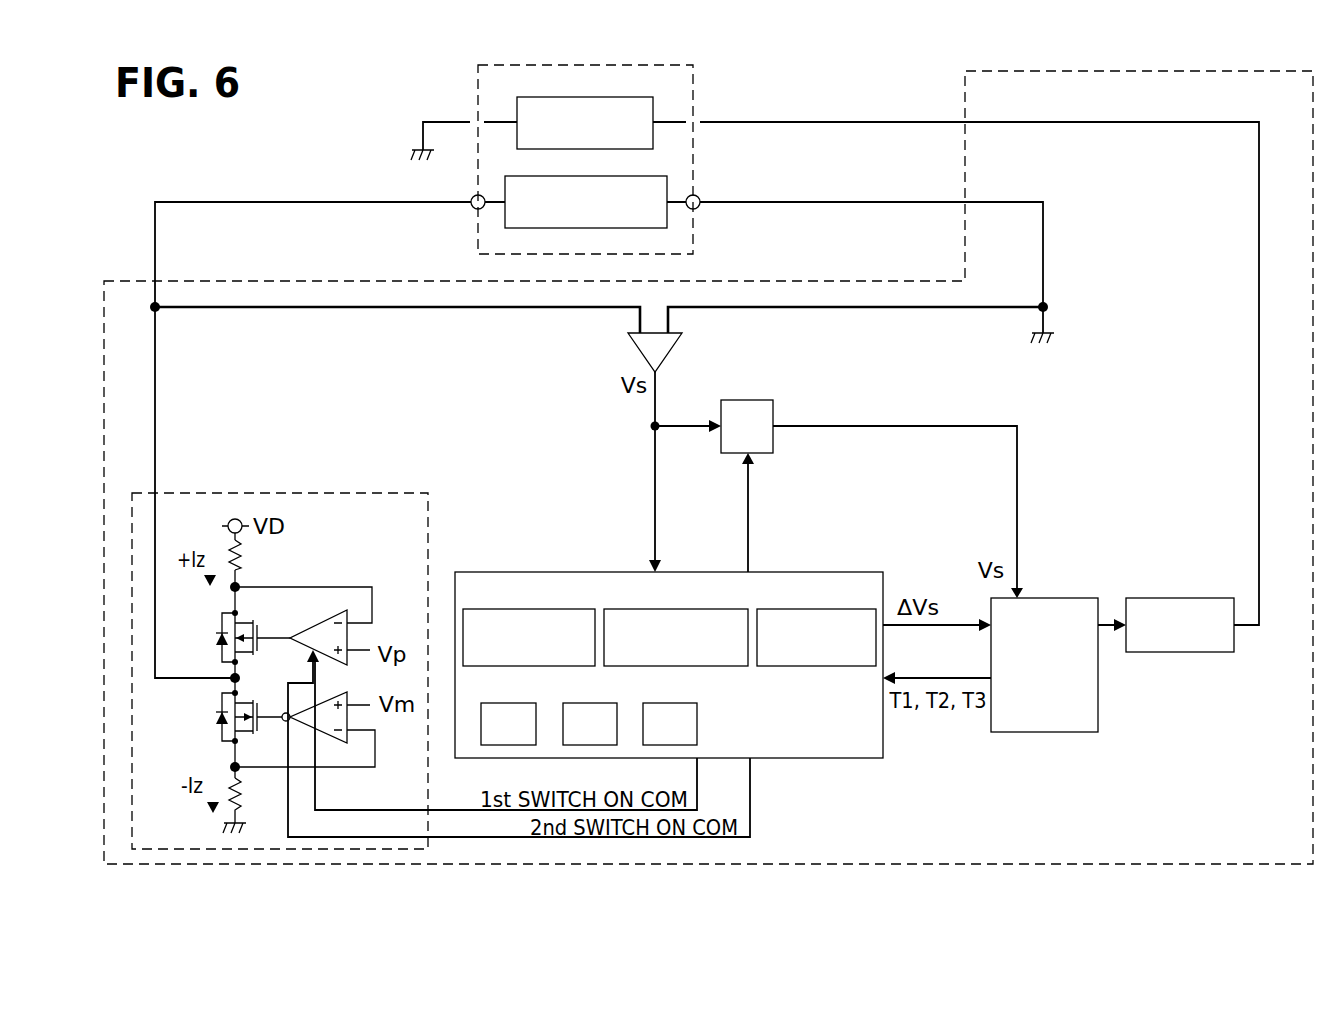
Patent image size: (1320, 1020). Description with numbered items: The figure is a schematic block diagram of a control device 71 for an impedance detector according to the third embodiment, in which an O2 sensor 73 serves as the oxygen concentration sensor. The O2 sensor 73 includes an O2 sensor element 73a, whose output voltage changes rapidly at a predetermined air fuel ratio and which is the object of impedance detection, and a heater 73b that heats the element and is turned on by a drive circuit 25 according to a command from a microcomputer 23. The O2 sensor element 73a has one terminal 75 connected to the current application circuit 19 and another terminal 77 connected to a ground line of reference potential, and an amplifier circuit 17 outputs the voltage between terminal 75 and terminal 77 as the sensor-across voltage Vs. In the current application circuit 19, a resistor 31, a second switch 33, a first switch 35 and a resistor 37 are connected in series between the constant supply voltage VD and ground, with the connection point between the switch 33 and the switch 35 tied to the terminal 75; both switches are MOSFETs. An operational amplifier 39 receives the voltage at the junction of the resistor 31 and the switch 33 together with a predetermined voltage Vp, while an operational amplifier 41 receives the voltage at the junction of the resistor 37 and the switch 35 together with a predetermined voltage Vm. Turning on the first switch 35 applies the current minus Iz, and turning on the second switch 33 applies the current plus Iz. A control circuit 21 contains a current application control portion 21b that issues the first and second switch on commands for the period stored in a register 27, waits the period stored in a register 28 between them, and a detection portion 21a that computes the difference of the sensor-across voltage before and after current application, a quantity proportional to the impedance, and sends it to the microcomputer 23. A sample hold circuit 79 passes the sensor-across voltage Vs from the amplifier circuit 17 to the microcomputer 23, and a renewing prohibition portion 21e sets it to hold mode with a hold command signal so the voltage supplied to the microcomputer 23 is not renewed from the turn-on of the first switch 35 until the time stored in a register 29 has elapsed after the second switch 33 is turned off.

The amplifier circuit 17 is at (637, 355).
The current application circuit 19 is at (405, 488).
The control circuit 21 is at (669, 687).
The detection portion 21a is at (833, 608).
The current application control portion 21b is at (540, 608).
The renewing prohibition portion 21e is at (690, 608).
The microcomputer 23 is at (1048, 598).
The drive circuit 25 is at (1180, 598).
The register 27 is at (505, 703).
The register 28 is at (586, 703).
The register 29 is at (666, 703).
The resistor 31 is at (245, 560).
The second switch 33 is at (212, 637).
The first switch 35 is at (214, 709).
The resistor 37 is at (245, 798).
The operational amplifier 39 is at (357, 632).
The operational amplifier 41 is at (355, 722).
The control device 71 is at (356, 280).
The O2 sensor 73 is at (693, 158).
The O2 sensor element 73a is at (627, 176).
The heater 73b is at (627, 97).
The terminal 75 is at (476, 210).
The terminal 77 is at (697, 210).
The sample hold circuit 79 is at (745, 400).